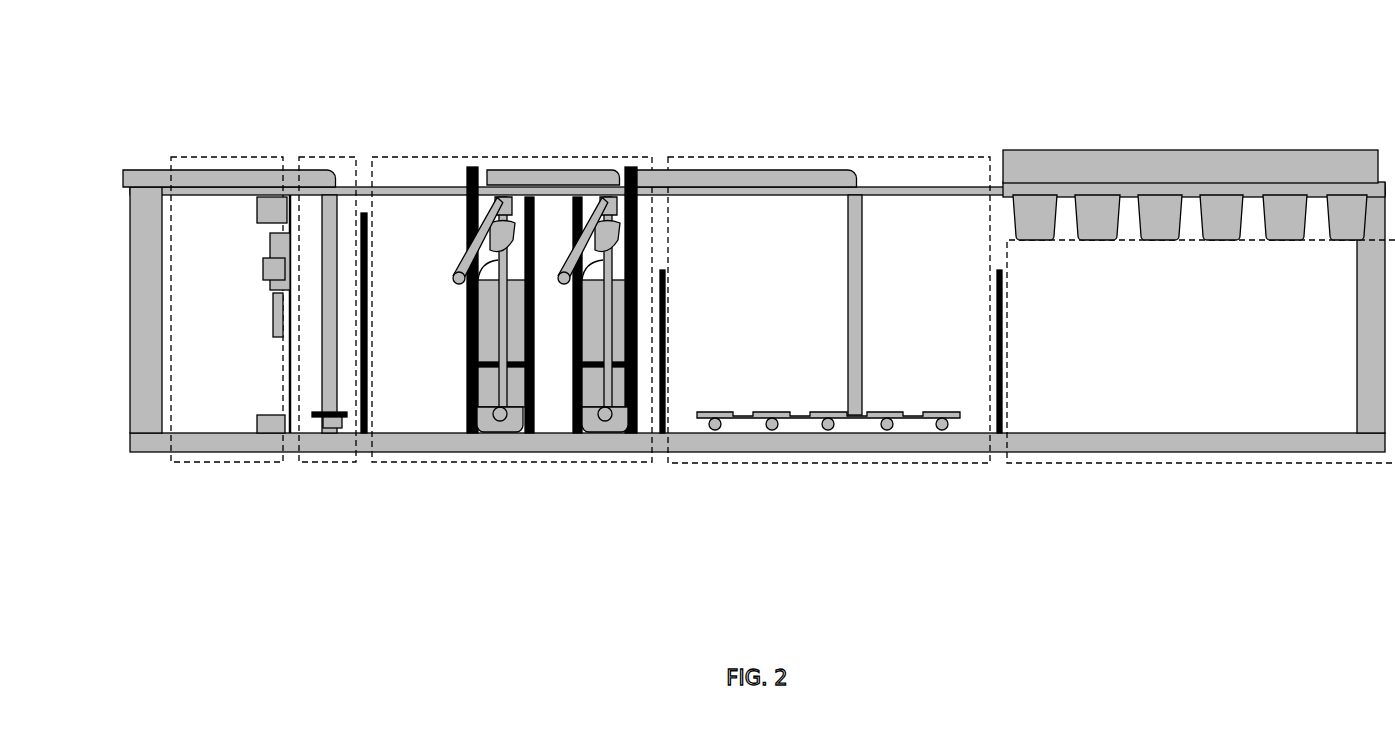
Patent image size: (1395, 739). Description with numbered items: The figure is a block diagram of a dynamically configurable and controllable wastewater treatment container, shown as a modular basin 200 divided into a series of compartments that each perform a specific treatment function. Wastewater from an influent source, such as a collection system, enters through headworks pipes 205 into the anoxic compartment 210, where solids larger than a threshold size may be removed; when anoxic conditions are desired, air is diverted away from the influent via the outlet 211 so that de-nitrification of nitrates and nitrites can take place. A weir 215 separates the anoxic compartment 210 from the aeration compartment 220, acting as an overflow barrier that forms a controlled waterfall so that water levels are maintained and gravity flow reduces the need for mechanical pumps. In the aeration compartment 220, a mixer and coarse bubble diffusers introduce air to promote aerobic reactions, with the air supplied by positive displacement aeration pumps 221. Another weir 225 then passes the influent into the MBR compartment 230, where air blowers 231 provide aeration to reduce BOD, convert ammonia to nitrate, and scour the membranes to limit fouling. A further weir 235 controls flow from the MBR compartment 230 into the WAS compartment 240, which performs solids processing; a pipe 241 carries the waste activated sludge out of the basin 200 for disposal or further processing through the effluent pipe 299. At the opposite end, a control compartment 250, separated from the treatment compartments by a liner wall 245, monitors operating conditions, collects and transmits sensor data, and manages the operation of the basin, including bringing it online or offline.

The modular basin 200 is at (1323, 49).
The effluent pipe 299 is at (128, 170).
The control compartment 250 is at (171, 158).
The liner wall 245 is at (290, 452).
The WAS compartment 240 is at (323, 157).
The pipe 241 is at (330, 433).
The weir 235 is at (364, 452).
The MBR compartment 230 is at (548, 157).
The air blowers 231 is at (610, 413).
The weir 225 is at (662, 452).
The aeration compartment 220 is at (803, 157).
The positive displacement aeration pumps 221 is at (826, 433).
The weir 215 is at (998, 452).
The anoxic compartment 210 is at (1132, 463).
The outlet 211 is at (1047, 150).
The headworks pipes 205 is at (1175, 150).